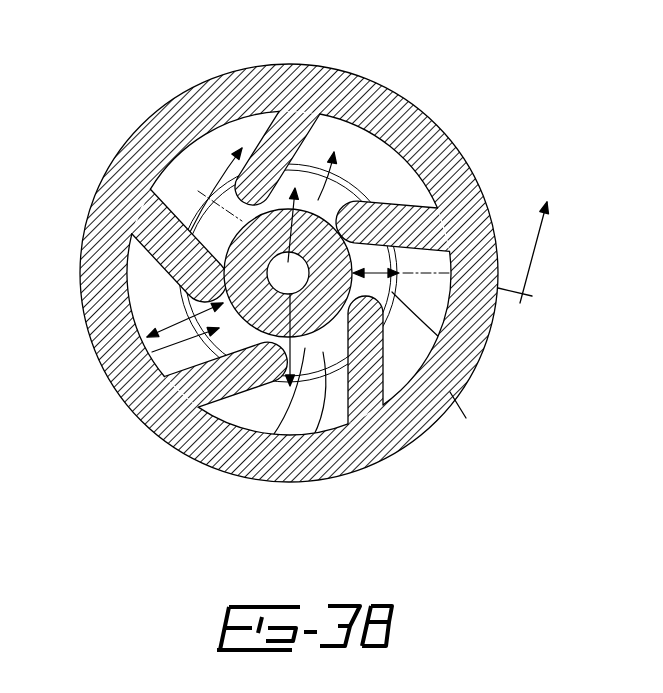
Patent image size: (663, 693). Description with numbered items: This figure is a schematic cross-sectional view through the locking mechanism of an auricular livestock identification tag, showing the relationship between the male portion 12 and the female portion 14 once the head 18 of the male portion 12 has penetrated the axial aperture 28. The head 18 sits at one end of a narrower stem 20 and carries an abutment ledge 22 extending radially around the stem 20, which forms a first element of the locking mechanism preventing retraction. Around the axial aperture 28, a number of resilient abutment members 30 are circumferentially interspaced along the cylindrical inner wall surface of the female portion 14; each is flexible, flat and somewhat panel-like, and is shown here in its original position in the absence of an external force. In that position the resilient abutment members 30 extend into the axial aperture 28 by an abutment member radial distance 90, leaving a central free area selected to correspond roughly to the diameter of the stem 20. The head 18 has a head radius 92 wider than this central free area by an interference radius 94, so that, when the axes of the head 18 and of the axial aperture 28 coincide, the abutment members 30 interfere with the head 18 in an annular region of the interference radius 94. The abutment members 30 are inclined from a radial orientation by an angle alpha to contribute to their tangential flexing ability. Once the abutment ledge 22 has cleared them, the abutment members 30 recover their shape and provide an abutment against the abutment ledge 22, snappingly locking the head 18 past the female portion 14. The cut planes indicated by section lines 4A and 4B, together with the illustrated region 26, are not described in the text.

The male portion 12 is at (117, 390).
The female portion 14 is at (486, 345).
The head 18 is at (452, 141).
The stem 20 is at (306, 64).
The abutment ledge 22 is at (306, 483).
The chamber 26 is at (489, 206).
The axial aperture 28 is at (393, 188).
The resilient abutment member 30 is at (497, 238).
The abutment member radial distance 90 is at (92, 332).
The head radius 92 is at (243, 460).
The interference radius 94 is at (481, 356).
The section line 4A is at (499, 323).
The section line 4B is at (150, 222).